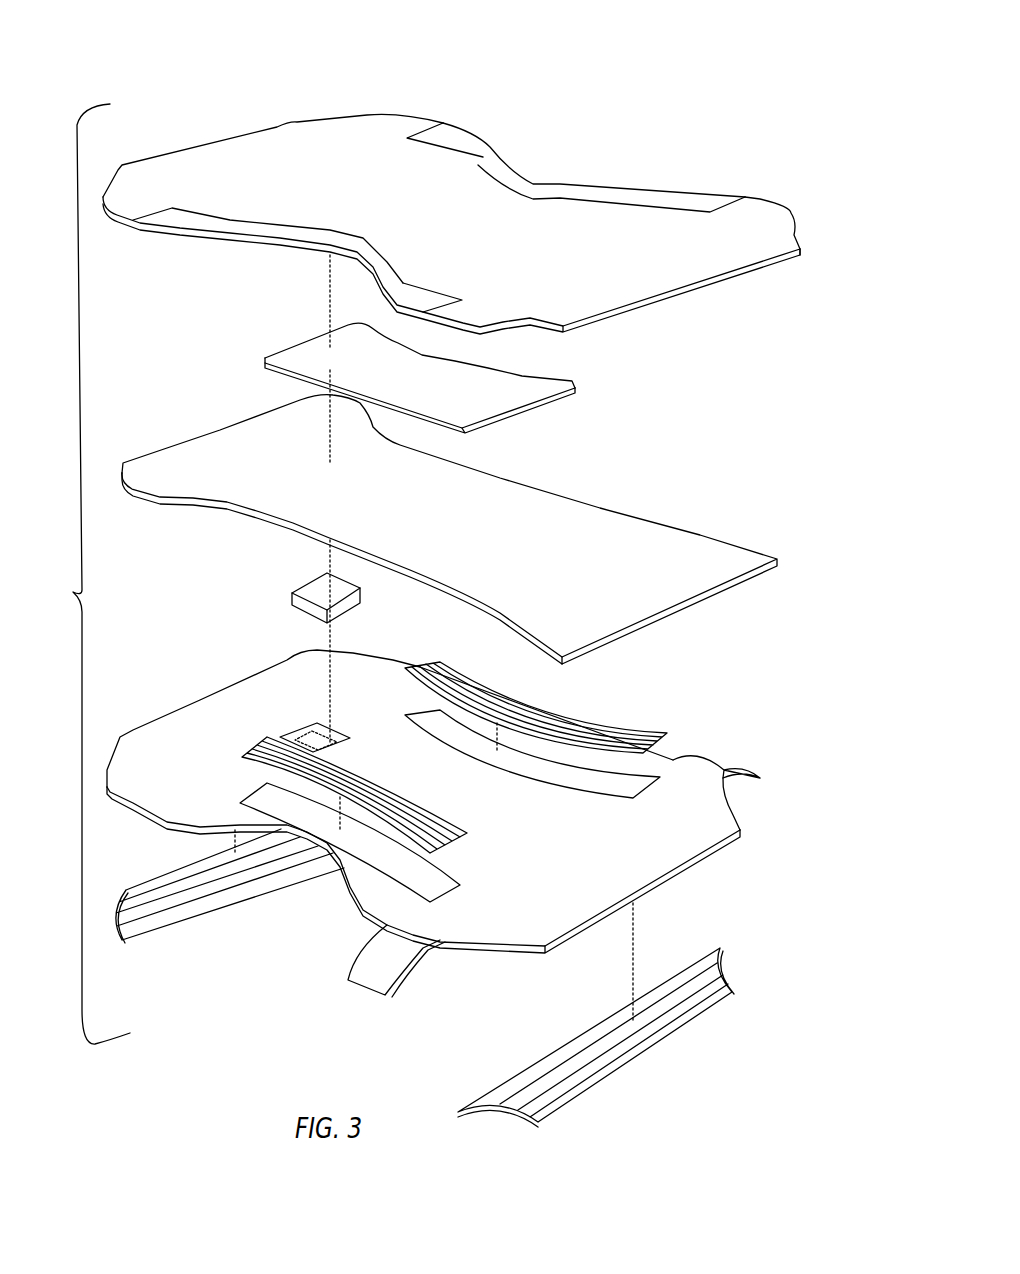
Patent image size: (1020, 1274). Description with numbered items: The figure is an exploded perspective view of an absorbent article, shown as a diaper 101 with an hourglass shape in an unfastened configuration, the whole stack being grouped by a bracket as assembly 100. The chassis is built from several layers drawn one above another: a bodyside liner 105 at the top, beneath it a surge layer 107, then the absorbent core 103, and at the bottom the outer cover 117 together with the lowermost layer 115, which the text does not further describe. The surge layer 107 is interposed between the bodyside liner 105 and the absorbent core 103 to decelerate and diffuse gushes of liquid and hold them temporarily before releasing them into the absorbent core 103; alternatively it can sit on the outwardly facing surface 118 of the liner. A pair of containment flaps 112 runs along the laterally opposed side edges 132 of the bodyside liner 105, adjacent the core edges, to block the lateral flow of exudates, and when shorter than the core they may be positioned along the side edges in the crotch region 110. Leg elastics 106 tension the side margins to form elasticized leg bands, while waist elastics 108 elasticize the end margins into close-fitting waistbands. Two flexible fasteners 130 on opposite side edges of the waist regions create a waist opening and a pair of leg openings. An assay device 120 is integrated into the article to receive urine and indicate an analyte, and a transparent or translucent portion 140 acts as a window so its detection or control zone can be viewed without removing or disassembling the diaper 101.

The sensor assembly 100 is at (73, 592).
The diaper 101 is at (608, 68).
The absorbent core 103 is at (228, 428).
The bodyside liner 105 is at (753, 199).
The leg elastics 106 is at (567, 722).
The surge layer 107 is at (553, 400).
The waist elastics 108 is at (160, 922).
The crotch region 110 is at (280, 138).
The containment flaps 112 is at (560, 184).
The bottom layer 115 is at (678, 872).
The outer cover 117 is at (733, 818).
The outwardly facing surface 118 is at (372, 122).
The assay device 120 is at (292, 593).
The fasteners 130 is at (708, 762).
The side edges 132 is at (492, 158).
The transparent or translucent portion 140 is at (306, 728).